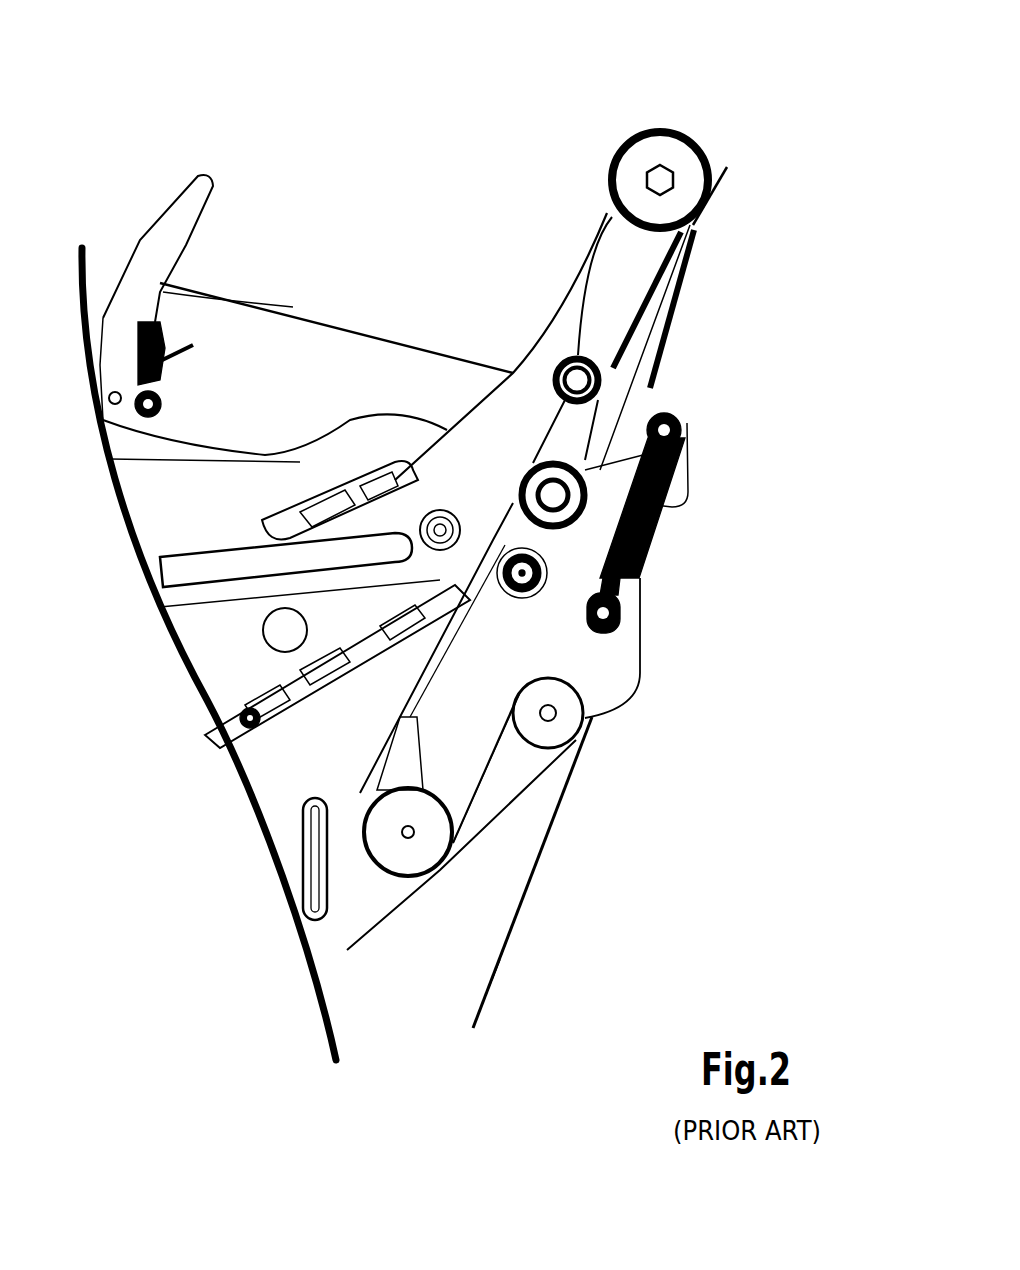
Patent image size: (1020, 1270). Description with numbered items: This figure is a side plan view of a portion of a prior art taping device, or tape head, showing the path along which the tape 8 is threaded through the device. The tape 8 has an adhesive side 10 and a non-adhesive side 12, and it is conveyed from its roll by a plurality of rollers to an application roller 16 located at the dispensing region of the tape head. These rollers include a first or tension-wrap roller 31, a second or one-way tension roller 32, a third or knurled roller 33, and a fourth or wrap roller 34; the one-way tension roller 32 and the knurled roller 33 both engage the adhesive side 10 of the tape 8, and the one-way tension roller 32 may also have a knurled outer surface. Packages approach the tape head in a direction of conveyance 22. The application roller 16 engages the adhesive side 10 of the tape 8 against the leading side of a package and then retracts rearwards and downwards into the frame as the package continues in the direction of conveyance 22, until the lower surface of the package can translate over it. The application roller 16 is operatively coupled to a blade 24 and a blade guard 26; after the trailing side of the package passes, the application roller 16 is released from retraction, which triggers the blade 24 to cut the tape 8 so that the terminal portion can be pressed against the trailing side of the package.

The tape 8 is at (466, 1060).
The adhesive side 10 is at (537, 867).
The non-adhesive side 12 is at (490, 980).
The application roller 16 is at (660, 130).
The direction of conveyance 22 is at (752, 197).
The blade 24 is at (293, 307).
The blade guard 26 is at (167, 253).
The tension-wrap roller 31 is at (588, 716).
The one-way tension roller 32 is at (388, 873).
The knurled roller 33 is at (535, 473).
The wrap roller 34 is at (580, 355).